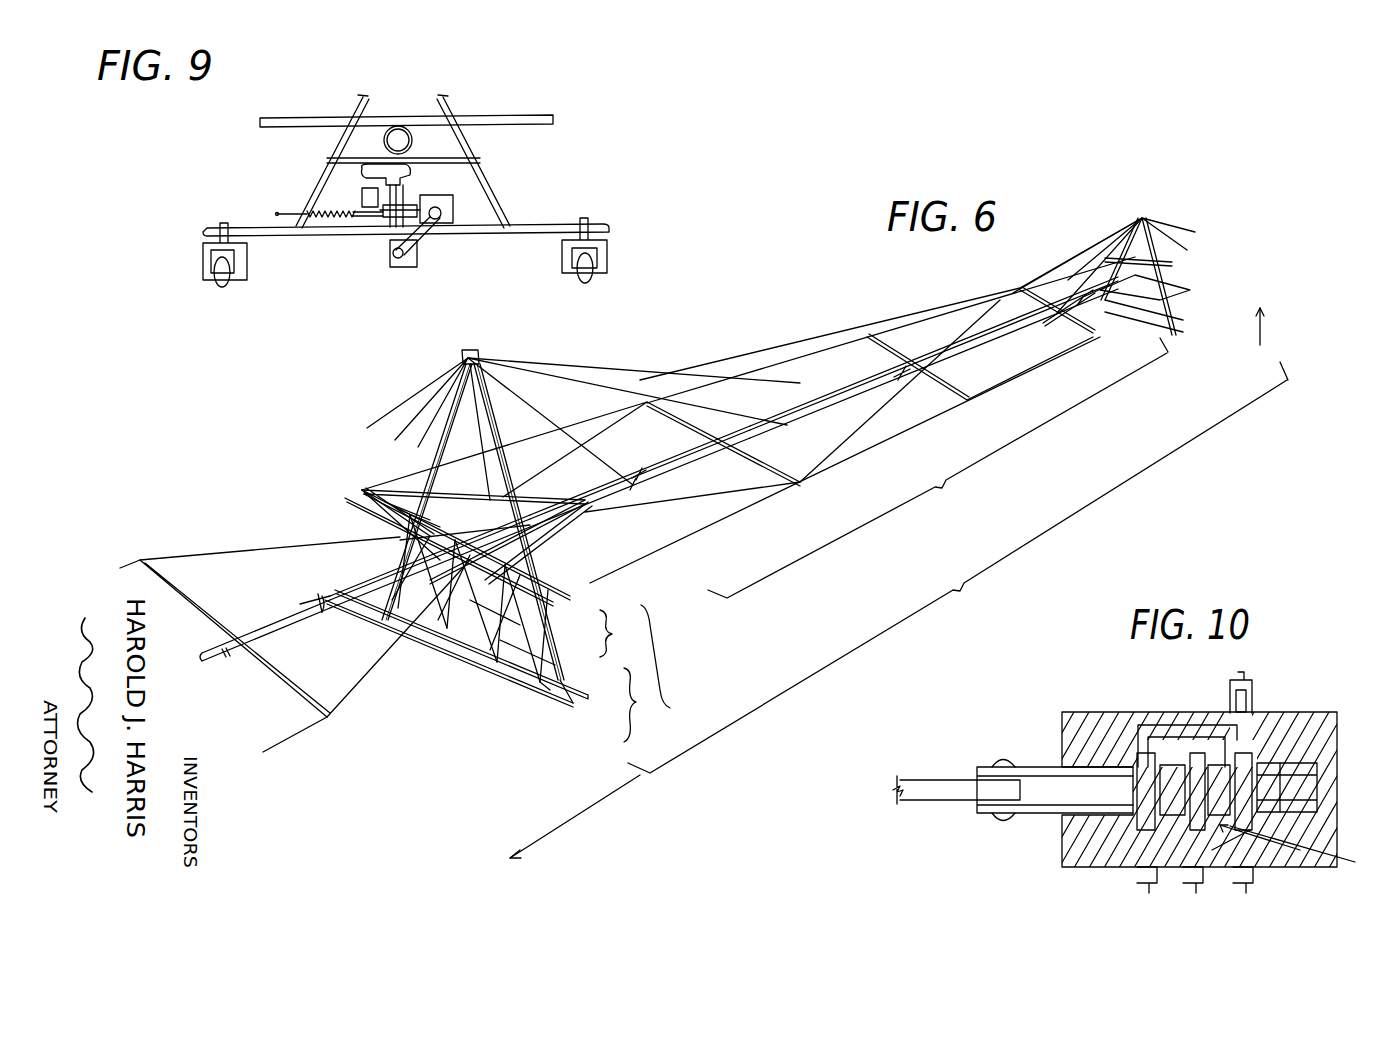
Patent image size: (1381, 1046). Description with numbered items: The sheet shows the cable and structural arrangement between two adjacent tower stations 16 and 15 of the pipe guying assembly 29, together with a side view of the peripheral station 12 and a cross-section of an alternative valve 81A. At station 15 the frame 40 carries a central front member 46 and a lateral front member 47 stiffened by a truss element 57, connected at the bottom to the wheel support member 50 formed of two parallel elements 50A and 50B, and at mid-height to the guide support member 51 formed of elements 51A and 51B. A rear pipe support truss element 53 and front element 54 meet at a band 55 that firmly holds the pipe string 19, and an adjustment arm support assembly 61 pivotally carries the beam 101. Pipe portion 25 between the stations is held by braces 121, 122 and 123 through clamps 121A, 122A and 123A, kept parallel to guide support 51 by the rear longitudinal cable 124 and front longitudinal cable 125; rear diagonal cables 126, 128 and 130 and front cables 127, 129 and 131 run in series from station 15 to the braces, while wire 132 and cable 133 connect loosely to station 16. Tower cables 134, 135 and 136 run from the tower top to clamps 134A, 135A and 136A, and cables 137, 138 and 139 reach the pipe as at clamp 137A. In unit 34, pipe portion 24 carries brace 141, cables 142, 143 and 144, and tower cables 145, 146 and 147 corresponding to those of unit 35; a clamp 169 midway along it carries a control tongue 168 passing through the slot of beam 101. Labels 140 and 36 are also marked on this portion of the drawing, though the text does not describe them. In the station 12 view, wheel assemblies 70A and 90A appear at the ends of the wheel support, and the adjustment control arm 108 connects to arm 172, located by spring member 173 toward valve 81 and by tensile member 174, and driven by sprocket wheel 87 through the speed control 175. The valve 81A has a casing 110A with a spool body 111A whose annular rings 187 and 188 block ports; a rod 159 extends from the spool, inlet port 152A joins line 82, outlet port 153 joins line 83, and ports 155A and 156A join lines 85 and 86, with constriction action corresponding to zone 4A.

In FIG. 9, the guide support member 51 is at (372, 112).
In FIG. 6, the guide support member 51 is at (490, 573).
In FIG. 9, the pipe string 19 is at (396, 126).
In FIG. 9, the station 12 is at (500, 200).
In FIG. 9, the valve unit 81 is at (405, 178).
In FIG. 9, the arm 172 is at (370, 190).
In FIG. 9, the spring member 173 is at (335, 205).
In FIG. 9, the tensile member 174 is at (303, 210).
In FIG. 9, the wheel support member 50 is at (548, 238).
In FIG. 6, the wheel support member 50 is at (491, 669).
In FIG. 9, the speed control 175 is at (447, 225).
In FIG. 9, the sprocket wheel 87 is at (401, 271).
In FIG. 9, the adjustment control arm 108 is at (368, 215).
In FIG. 9, the wheel assembly 70A is at (195, 248).
In FIG. 9, the wheel assembly 90A is at (610, 238).
In FIG. 6, the pipe portion 24 is at (208, 648).
In FIG. 6, the pipe section 140 is at (290, 622).
In FIG. 6, the beam 101 is at (380, 578).
In FIG. 6, the control tongue 168 is at (318, 594).
In FIG. 6, the clamp 169 is at (322, 605).
In FIG. 6, the brace 121 is at (756, 458).
In FIG. 6, the clamp 121A is at (725, 447).
In FIG. 6, the pipe portion 25 is at (788, 428).
In FIG. 6, the brace 122 is at (945, 388).
In FIG. 6, the clamp 122A is at (900, 372).
In FIG. 6, the frame 40 is at (448, 448).
In FIG. 6, the tower cable 145 is at (385, 418).
In FIG. 6, the tower cable 146 is at (404, 435).
In FIG. 6, the tower cable 147 is at (420, 475).
In FIG. 6, the tower wire cable 134 is at (528, 386).
In FIG. 6, the tower wire cable 135 is at (558, 372).
In FIG. 6, the rear longitudinal cable 124 is at (608, 412).
In FIG. 6, the tower wire cable 136 is at (642, 368).
In FIG. 6, the clamp 136A is at (820, 385).
In FIG. 6, the rear diagonal cable 126 is at (640, 408).
In FIG. 6, the rear diagonal cable 128 is at (700, 396).
In FIG. 6, the front diagonal cable 129 is at (848, 440).
In FIG. 6, the rear diagonal cable 130 is at (975, 348).
In FIG. 6, the clamp 135A is at (765, 435).
In FIG. 6, the clamp 134A is at (635, 487).
In FIG. 6, the front diagonal cable 127 is at (700, 496).
In FIG. 6, the front longitudinal cable 125 is at (728, 520).
In FIG. 6, the tower station 16 is at (1142, 216).
In FIG. 6, the tower wire cable 137 is at (988, 308).
In FIG. 6, the clamp 137A is at (935, 360).
In FIG. 6, the tower wire cable 138 is at (1070, 285).
In FIG. 6, the tower wire cable 139 is at (1118, 255).
In FIG. 6, the wire 132 is at (1033, 287).
In FIG. 6, the front cable 131 is at (1010, 360).
In FIG. 6, the cable 133 is at (1105, 318).
In FIG. 6, the brace 123 is at (1085, 335).
In FIG. 6, the clamp 123A is at (1080, 310).
In FIG. 6, the guide support member element 51B is at (552, 598).
In FIG. 6, the guide support member element 51A is at (548, 610).
In FIG. 6, the wheel support element 50A is at (578, 696).
In FIG. 6, the wheel support element 50B is at (573, 706).
In FIG. 6, the tower station 15 is at (656, 660).
In FIG. 6, the truss element 57 is at (495, 665).
In FIG. 6, the lateral front member 47 is at (532, 675).
In FIG. 6, the central front member 46 is at (556, 696).
In FIG. 6, the rear pipe support truss element 53 is at (512, 502).
In FIG. 6, the band 55 is at (595, 500).
In FIG. 6, the front pipe support element 54 is at (560, 530).
In FIG. 6, the adjustment arm support assembly 61 is at (402, 538).
In FIG. 6, the cable 144 is at (155, 560).
In FIG. 6, the transverse brace 141 is at (285, 690).
In FIG. 6, the front longitudinal cable 142 is at (305, 728).
In FIG. 6, the cable 143 is at (375, 660).
In FIG. 6, the pipe guying assembly 29 is at (938, 468).
In FIG. 6, the unit 35 is at (958, 567).
In FIG. 6, the unit 34 is at (557, 827).
In FIG. 6, the direction arrow 36 is at (1258, 337).
In FIG. 10, the casing 110A is at (1306, 705).
In FIG. 10, the valve 81A is at (1060, 741).
In FIG. 10, the rod 159 is at (938, 788).
In FIG. 10, the spool body 111A is at (1016, 810).
In FIG. 10, the annular ring 187 is at (1170, 765).
In FIG. 10, the annular ring 188 is at (1218, 768).
In FIG. 10, the inlet port 152A is at (1238, 712).
In FIG. 10, the line 82 is at (1252, 697).
In FIG. 10, the zone 4A is at (1300, 850).
In FIG. 10, the passage 153 is at (1305, 851).
In FIG. 10, the port 155A is at (1150, 828).
In FIG. 10, the line 85 is at (1145, 878).
In FIG. 10, the line 83 is at (1195, 878).
In FIG. 10, the line 86 is at (1250, 878).
In FIG. 10, the port 156A is at (1255, 855).